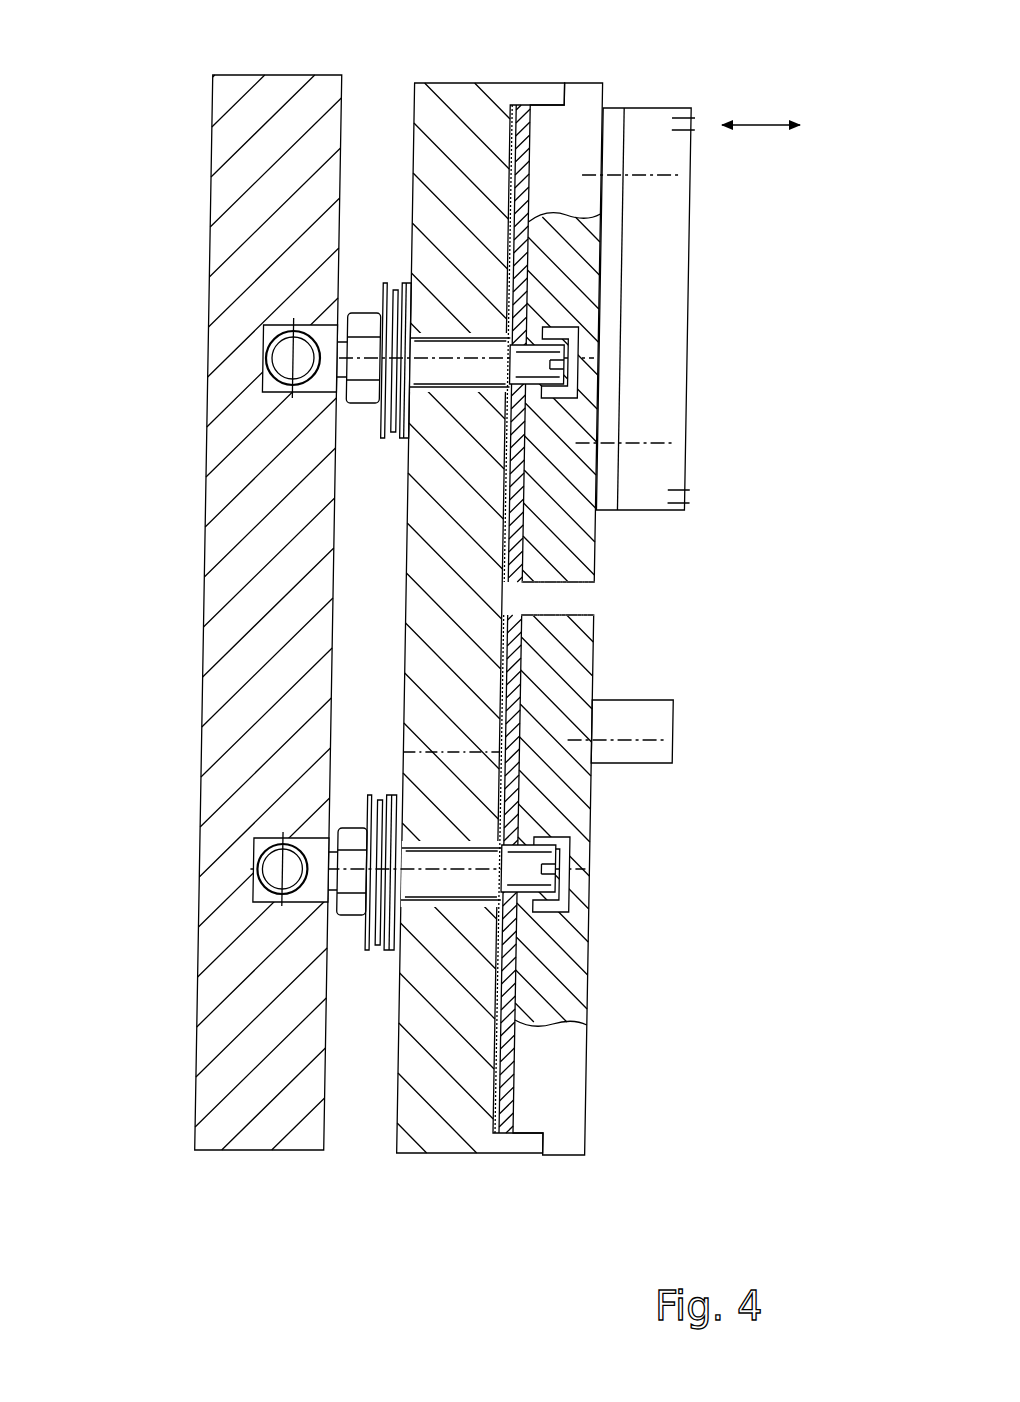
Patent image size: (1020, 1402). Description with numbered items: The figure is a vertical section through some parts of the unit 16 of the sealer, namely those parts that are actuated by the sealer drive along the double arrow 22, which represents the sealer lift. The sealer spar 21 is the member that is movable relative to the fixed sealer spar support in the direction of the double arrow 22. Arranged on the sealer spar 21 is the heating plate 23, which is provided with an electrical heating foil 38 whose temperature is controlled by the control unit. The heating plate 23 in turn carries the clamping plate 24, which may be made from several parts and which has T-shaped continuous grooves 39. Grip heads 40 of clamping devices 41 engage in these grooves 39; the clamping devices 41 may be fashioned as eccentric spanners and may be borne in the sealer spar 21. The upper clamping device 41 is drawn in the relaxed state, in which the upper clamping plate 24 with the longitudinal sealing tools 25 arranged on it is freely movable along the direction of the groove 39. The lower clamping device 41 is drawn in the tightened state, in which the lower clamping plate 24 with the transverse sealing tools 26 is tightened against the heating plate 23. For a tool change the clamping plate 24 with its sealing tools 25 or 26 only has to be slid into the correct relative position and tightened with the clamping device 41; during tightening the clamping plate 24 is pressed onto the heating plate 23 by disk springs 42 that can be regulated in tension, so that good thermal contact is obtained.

The unit 16 is at (157, 93).
The sealer spar 21 is at (218, 546).
The double arrow 22 is at (760, 120).
The heating plate 23 is at (462, 190).
The clamping plate 24 is at (563, 249).
The longitudinal sealing tools 25 is at (645, 268).
The transverse sealing tools 26 is at (643, 718).
The electrical heating foil 38 is at (508, 513).
The T-shaped continuous grooves 39 is at (556, 333).
The grip heads 40 is at (557, 394).
The clamping devices 41 is at (322, 305).
The disk springs 42 is at (377, 443).